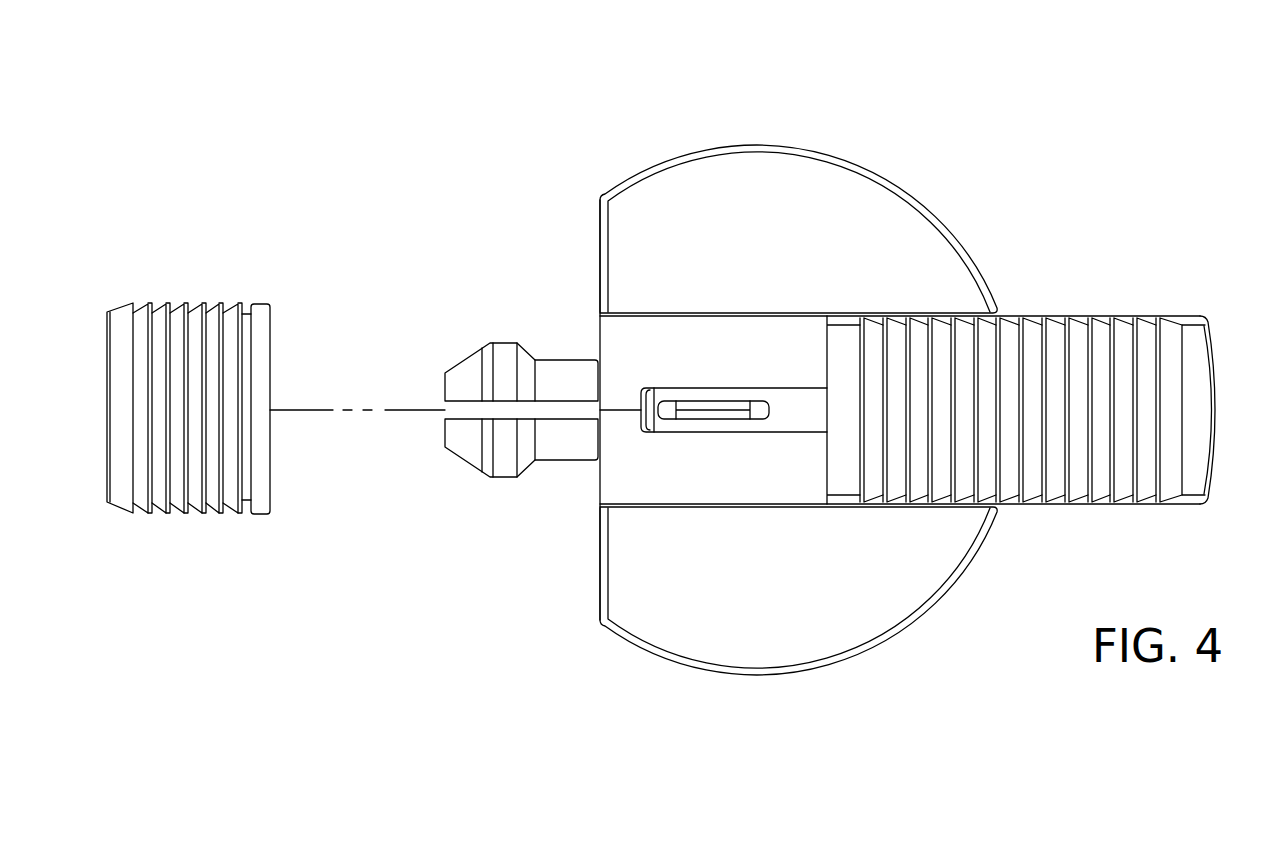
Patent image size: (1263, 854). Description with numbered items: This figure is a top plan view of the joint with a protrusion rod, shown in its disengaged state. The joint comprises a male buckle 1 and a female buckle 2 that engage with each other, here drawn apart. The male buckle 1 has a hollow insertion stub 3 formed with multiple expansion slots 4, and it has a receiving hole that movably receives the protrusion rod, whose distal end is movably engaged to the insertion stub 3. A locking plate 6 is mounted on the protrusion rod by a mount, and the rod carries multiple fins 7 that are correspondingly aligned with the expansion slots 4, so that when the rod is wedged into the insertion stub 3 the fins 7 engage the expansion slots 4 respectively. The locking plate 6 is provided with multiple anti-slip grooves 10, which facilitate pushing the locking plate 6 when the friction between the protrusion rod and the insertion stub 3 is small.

The male buckle 1 is at (907, 340).
The female buckle 2 is at (187, 280).
The insertion stub 3 is at (536, 320).
The expansion slots 4 is at (473, 410).
The locking plate 6 is at (1017, 275).
The fins 7 is at (722, 410).
The anti-slip grooves 10 is at (1119, 405).